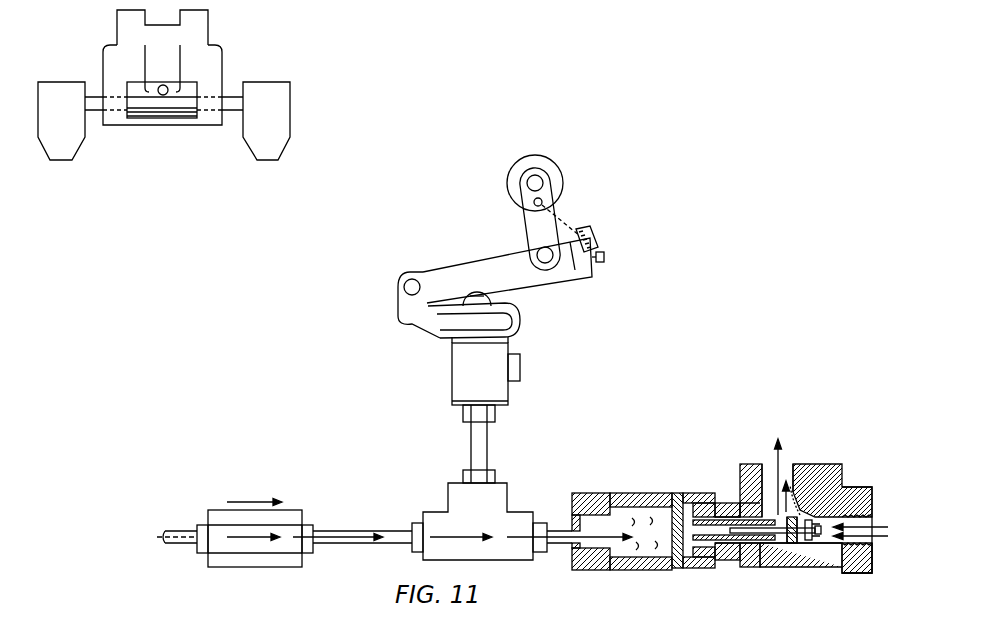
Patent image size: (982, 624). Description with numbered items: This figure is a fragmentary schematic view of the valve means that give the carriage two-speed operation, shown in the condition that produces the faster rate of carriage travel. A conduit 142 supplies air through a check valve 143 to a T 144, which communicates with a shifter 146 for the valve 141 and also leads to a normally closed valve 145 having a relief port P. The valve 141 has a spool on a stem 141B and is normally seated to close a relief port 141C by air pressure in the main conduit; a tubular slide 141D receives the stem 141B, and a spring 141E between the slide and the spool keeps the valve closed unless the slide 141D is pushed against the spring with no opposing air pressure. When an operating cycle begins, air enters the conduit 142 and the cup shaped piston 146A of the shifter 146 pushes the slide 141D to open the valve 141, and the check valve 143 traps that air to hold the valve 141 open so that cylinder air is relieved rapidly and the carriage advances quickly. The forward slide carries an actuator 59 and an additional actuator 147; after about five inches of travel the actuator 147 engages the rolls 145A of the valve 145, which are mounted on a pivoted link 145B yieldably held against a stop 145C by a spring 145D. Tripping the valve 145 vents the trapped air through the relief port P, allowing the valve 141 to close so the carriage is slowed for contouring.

The actuator 59 is at (70, 143).
The additional actuator 147 is at (275, 143).
The rolls 145A is at (555, 175).
The pivoted link 145B is at (535, 228).
The spring 145D is at (573, 222).
The stop 145C is at (585, 275).
The normally closed valve 145 is at (493, 355).
The relief port P is at (527, 370).
The check valve 143 is at (477, 443).
The conduit 142 is at (190, 540).
The T 144 is at (445, 522).
The valve 141 is at (786, 557).
The shifter 146 is at (603, 492).
The cup shaped piston 146A is at (638, 569).
The stem 141B is at (762, 530).
The relief port 141C is at (785, 475).
The tubular slide 141D is at (693, 493).
The spring 141E is at (805, 565).